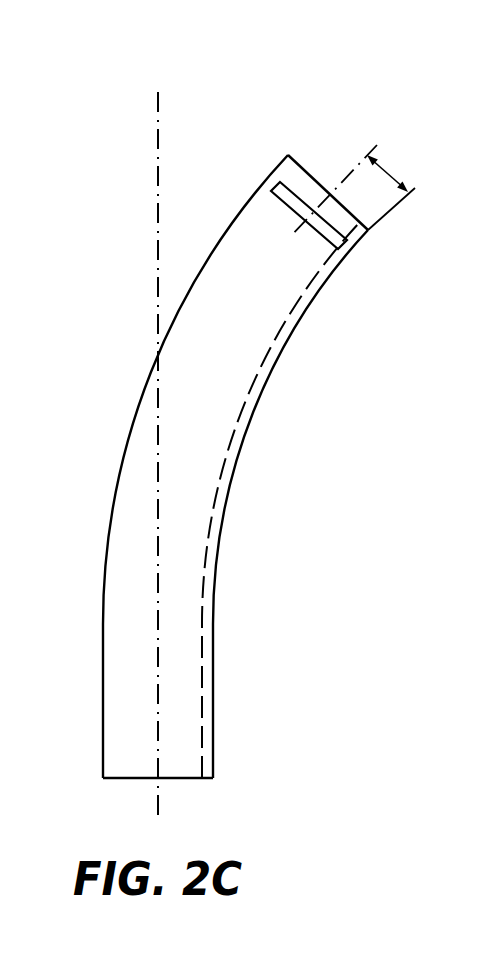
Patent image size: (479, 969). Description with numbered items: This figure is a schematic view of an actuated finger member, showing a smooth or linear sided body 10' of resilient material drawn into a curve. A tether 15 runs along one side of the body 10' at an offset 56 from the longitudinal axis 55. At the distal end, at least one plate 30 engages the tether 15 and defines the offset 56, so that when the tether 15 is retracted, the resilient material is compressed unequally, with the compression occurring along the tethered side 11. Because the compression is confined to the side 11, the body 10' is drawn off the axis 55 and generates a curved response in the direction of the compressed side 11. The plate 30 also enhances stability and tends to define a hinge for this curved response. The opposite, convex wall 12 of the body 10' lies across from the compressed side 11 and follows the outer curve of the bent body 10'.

The smooth or linear sided body 10' is at (201, 466).
The side 11 is at (242, 529).
The outer (convex) wall 12 is at (90, 523).
The tether 15 is at (277, 337).
The plate 30 is at (275, 187).
The axis 55 is at (158, 114).
The offset 56 is at (389, 174).